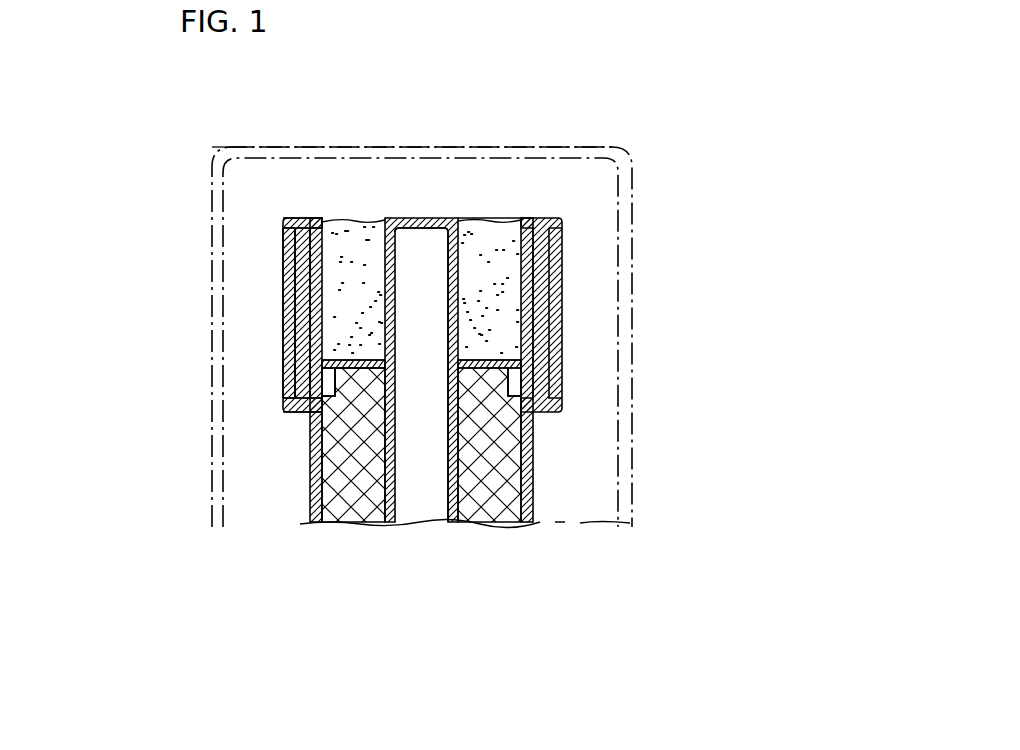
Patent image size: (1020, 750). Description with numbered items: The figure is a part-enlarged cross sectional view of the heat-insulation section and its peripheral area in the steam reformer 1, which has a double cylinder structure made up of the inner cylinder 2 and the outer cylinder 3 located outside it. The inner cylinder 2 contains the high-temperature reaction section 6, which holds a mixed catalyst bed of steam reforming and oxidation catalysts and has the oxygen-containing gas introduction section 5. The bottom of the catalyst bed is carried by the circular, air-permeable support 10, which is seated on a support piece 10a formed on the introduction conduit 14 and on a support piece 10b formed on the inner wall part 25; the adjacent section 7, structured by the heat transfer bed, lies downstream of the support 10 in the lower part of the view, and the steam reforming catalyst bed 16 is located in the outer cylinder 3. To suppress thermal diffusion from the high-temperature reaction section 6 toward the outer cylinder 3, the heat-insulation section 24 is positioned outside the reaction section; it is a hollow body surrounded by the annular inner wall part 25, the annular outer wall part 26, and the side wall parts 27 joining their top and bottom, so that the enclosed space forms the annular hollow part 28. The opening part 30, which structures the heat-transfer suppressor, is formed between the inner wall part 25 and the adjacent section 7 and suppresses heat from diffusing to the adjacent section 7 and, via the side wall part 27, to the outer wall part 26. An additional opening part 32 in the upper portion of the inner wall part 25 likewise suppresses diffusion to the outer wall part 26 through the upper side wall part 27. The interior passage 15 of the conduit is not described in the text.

The steam reformer 1 is at (186, 149).
The inner cylinder 2 is at (305, 500).
The outer cylinder 3 is at (603, 146).
The oxygen-containing gas introduction section 5 is at (430, 333).
The high-temperature reaction section 6 is at (505, 283).
The adjacent section 7 is at (500, 502).
The support 10 is at (322, 362).
The support piece 10a is at (342, 370).
The support piece 10b is at (350, 385).
The introduction conduit 14 is at (410, 218).
The inner passage 15 is at (458, 302).
The steam reforming catalyst bed 16 is at (600, 480).
The heat-insulation section 24 is at (277, 245).
The inner wall part 25 is at (295, 313).
The outer wall part 26 is at (285, 356).
The side wall part 27 is at (300, 218).
The annular hollow part 28 is at (303, 275).
The opening part 30 is at (535, 392).
The opening part 32 is at (329, 255).